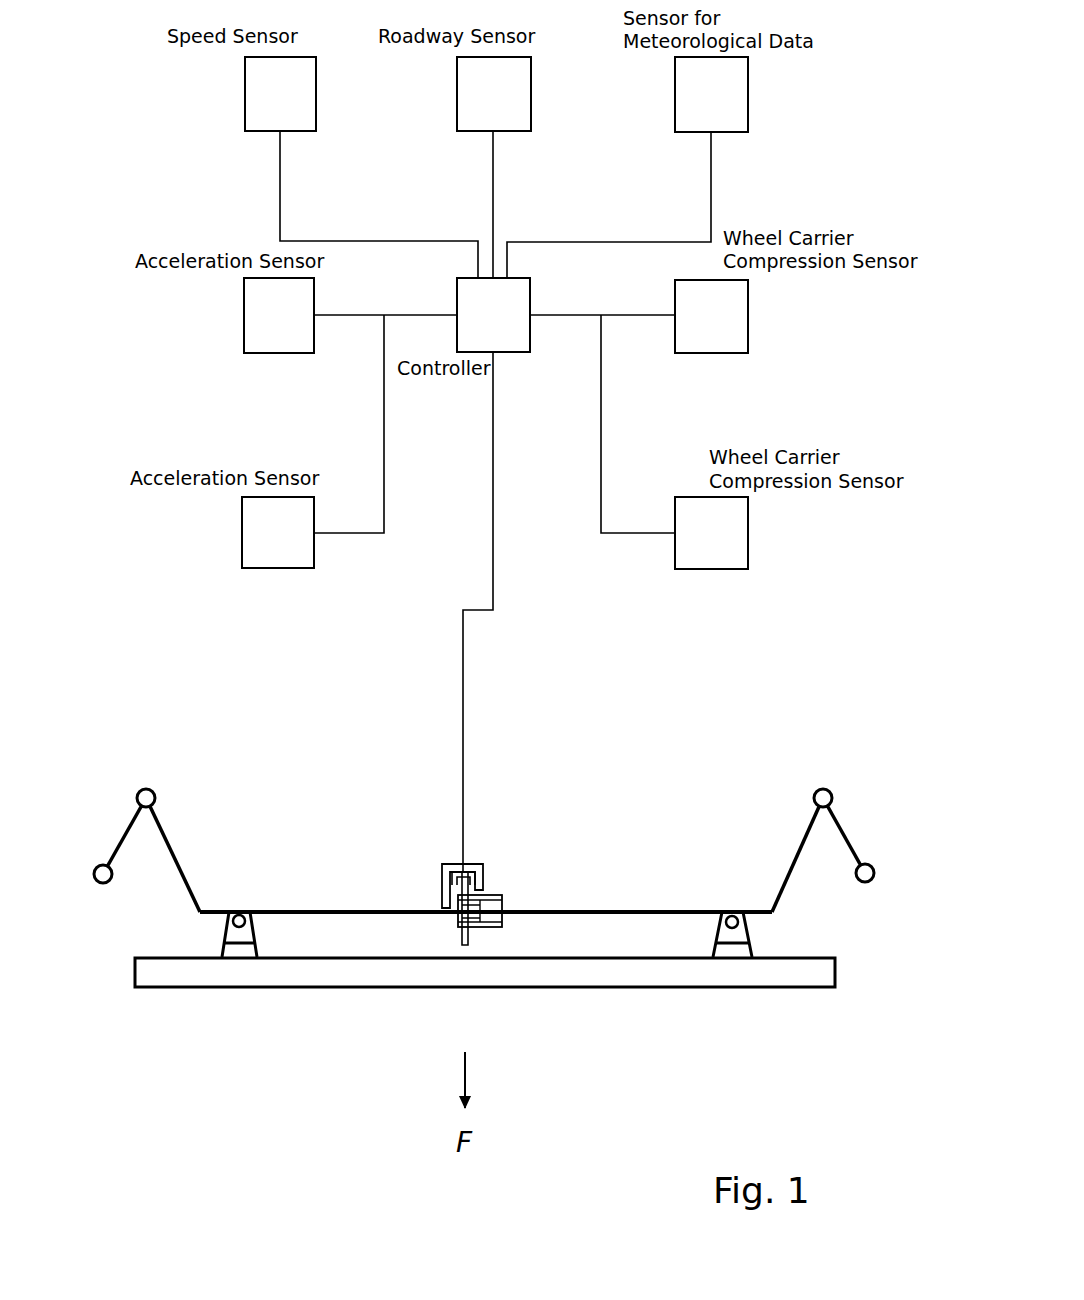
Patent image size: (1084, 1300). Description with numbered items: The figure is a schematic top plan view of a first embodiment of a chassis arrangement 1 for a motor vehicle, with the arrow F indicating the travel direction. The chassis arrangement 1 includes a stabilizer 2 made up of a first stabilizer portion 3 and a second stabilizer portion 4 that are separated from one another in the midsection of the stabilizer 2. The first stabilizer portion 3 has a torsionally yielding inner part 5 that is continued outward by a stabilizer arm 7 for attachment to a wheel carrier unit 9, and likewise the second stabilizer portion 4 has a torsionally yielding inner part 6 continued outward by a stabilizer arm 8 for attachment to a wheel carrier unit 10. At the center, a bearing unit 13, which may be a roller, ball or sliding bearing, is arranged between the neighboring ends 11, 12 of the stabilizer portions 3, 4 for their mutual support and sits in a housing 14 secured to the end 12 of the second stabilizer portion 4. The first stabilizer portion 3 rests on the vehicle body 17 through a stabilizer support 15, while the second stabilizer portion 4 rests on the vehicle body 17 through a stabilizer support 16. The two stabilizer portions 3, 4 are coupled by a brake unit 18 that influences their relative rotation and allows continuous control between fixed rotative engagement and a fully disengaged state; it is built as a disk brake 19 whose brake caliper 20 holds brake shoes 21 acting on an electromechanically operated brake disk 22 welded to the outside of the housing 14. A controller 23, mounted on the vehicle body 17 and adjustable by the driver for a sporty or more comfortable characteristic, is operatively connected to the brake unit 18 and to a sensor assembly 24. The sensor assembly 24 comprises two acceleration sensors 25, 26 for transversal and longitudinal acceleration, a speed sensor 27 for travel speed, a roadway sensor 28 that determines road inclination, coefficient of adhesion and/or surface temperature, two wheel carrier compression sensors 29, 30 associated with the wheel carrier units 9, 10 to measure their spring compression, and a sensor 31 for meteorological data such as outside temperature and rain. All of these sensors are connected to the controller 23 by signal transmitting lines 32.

The chassis arrangement 1 is at (286, 1111).
The stabilizer 2 is at (562, 852).
The first stabilizer portion 3 is at (333, 898).
The second stabilizer portion 4 is at (599, 900).
The inner part 5 is at (298, 910).
The inner part 6 is at (655, 910).
The stabilizer arm 7 is at (182, 872).
The stabilizer arm 8 is at (791, 866).
The wheel carrier unit 9 is at (131, 826).
The wheel carrier unit 10 is at (845, 836).
The end 11 is at (420, 914).
The end 12 is at (515, 914).
The bearing unit 13 is at (460, 915).
The housing 14 is at (486, 927).
The stabilizer support 15 is at (226, 931).
The stabilizer support 16 is at (746, 931).
The vehicle body 17 is at (170, 988).
The brake unit 18 is at (444, 838).
The disk brake 19 is at (479, 852).
The brake caliper 20 is at (444, 872).
The brake shoes 21 is at (481, 881).
The brake disk 22 is at (467, 945).
The controller 23 is at (493, 315).
The sensor assembly 24 is at (220, 212).
The acceleration sensor 25 is at (278, 532).
The acceleration sensor 26 is at (279, 315).
The speed sensor 27 is at (280, 94).
The roadway sensor 28 is at (494, 94).
The wheel carrier compression sensor 29 is at (711, 533).
The wheel carrier compression sensor 30 is at (711, 316).
The sensor for acquiring meteorological data 31 is at (711, 94).
The signal transmitting lines 32 is at (493, 203).